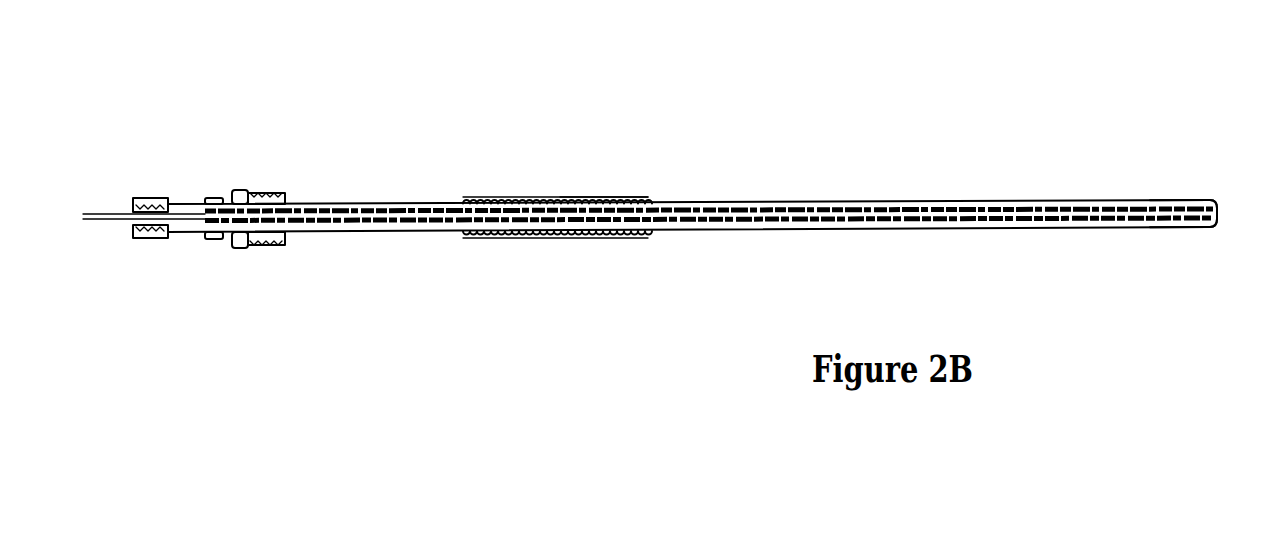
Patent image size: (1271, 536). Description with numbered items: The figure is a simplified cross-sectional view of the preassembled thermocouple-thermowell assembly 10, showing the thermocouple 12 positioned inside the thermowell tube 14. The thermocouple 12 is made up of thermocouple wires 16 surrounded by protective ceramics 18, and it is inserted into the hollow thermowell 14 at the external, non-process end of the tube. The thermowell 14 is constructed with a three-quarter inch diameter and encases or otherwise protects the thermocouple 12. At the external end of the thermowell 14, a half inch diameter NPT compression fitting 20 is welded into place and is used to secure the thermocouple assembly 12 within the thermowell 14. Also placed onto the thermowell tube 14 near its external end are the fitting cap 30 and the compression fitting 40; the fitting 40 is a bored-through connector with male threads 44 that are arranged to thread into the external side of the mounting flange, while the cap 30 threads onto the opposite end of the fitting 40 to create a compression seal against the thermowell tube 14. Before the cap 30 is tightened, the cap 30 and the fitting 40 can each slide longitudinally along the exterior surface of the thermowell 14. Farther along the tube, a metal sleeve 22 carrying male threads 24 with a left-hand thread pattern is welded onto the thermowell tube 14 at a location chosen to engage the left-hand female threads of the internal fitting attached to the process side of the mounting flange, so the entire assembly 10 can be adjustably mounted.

The thermocouple-thermowell assembly 10 is at (432, 120).
The thermocouple 12 is at (1153, 228).
The thermowell tube 14 is at (892, 202).
The thermocouple wires 16 is at (107, 224).
The protective ceramics 18 is at (380, 226).
The compression fitting 20 is at (145, 198).
The metal sleeve 22 is at (647, 238).
The male threads 24 is at (598, 198).
The fitting cap 30 is at (212, 240).
The compression fitting 40 is at (241, 190).
The male threads 44 is at (276, 193).